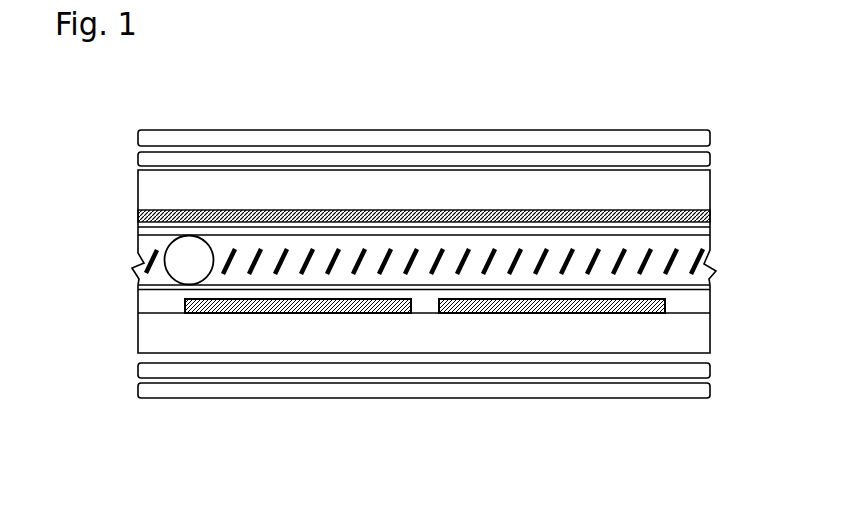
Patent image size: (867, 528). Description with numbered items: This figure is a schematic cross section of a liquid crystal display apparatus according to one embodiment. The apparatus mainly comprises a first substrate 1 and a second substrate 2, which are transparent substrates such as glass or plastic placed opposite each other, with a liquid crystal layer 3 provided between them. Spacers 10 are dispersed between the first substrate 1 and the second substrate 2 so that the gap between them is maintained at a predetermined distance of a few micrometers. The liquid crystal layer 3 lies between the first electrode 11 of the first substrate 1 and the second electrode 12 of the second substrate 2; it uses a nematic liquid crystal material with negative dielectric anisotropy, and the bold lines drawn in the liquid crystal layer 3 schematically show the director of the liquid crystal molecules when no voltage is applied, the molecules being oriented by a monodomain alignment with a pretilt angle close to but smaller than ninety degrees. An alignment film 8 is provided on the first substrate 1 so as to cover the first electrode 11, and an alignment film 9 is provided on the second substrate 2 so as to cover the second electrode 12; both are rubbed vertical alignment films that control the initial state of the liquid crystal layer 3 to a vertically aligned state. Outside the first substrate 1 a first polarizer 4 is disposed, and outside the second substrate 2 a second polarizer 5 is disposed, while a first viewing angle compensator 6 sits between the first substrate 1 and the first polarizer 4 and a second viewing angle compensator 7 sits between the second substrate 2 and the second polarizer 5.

The first substrate 1 is at (711, 178).
The second substrate 2 is at (711, 335).
The liquid crystal layer 3 is at (711, 247).
The first polarizer 4 is at (683, 129).
The second polarizer 5 is at (683, 398).
The first viewing angle compensator 6 is at (638, 159).
The second viewing angle compensator 7 is at (642, 372).
The alignment film 8 is at (711, 228).
The alignment film 9 is at (711, 293).
The spacer 10 is at (148, 258).
The first electrode 11 is at (500, 210).
The second electrode 12 is at (322, 313).